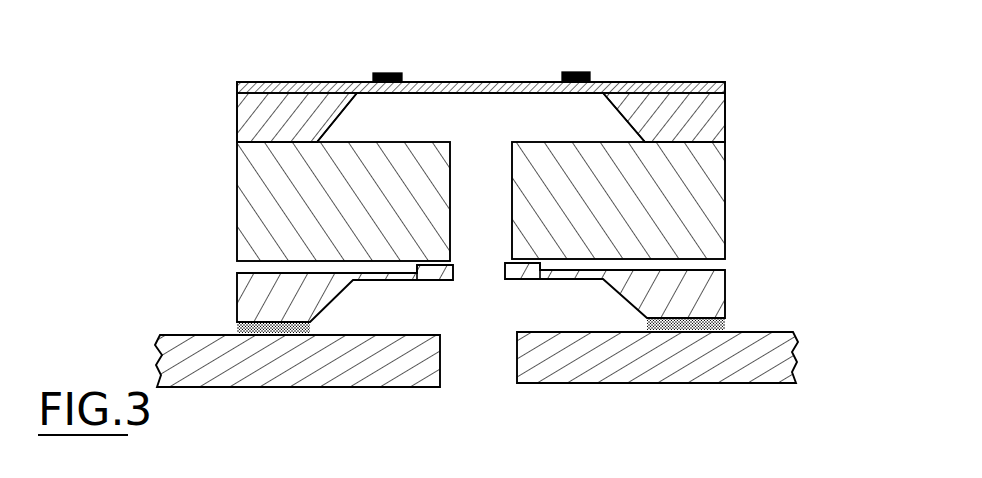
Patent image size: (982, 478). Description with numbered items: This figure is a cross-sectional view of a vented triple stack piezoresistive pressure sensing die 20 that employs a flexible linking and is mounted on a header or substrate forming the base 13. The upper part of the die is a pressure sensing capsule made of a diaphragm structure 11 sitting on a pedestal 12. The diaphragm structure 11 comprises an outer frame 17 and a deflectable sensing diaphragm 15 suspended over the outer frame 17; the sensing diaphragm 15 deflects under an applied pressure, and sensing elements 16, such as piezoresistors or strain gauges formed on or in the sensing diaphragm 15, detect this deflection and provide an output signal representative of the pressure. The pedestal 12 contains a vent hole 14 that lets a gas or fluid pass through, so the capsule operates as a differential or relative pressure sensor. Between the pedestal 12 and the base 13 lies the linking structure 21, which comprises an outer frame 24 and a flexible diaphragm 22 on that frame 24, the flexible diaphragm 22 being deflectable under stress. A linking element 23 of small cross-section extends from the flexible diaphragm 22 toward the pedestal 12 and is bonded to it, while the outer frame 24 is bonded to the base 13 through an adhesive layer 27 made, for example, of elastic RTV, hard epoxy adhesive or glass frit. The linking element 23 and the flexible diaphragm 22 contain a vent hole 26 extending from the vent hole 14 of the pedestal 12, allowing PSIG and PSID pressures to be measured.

The diaphragm structure 11 is at (698, 77).
The pedestal 12 is at (725, 183).
The base 13 is at (783, 352).
The vent hole 14 is at (477, 168).
The sensing diaphragm 15 is at (520, 93).
The sensing elements 16 is at (565, 72).
The outer frame 17 is at (620, 103).
The sensing die 20 is at (258, 82).
The linking structure 21 is at (725, 288).
The flexible diaphragm 22 is at (568, 280).
The linking element 23 is at (453, 268).
The outer frame 24 is at (320, 302).
The vent hole 26 is at (482, 273).
The adhesive layer 27 is at (727, 327).